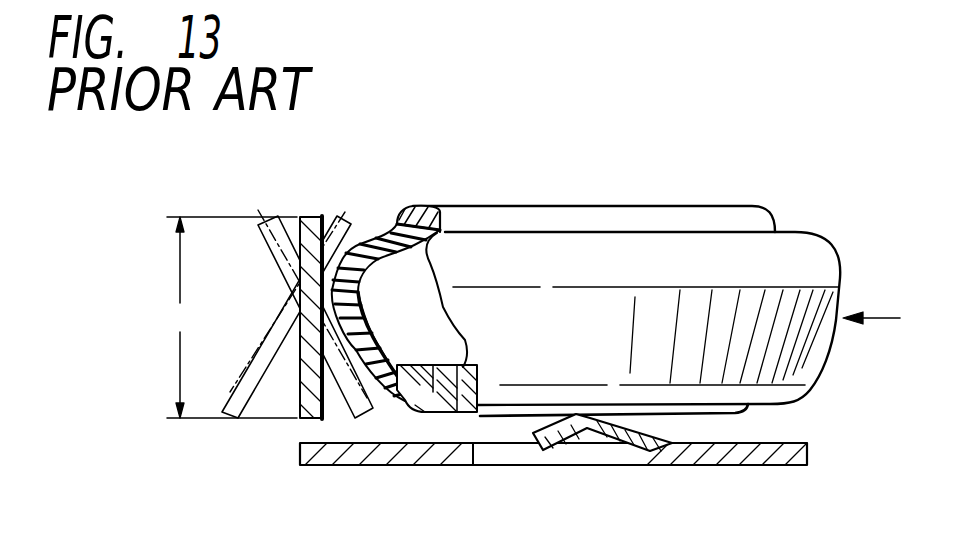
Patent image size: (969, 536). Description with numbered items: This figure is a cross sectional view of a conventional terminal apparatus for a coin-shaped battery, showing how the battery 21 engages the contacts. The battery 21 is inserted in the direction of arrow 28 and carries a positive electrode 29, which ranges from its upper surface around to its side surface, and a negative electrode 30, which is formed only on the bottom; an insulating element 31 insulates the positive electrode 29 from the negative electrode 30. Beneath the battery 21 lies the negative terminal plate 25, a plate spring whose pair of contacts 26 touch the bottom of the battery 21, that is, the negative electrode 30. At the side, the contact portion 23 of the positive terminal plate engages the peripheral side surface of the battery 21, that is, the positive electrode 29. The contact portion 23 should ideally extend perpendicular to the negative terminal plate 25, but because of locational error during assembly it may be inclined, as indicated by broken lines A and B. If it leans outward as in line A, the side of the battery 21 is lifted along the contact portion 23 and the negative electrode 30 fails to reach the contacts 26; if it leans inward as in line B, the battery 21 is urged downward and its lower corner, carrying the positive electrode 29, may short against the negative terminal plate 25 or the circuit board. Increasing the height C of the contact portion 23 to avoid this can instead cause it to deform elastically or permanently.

The coin-shaped battery 21 is at (780, 248).
The contact portion 23 is at (306, 215).
The negative terminal plate 25 is at (355, 466).
The contacts 26 is at (578, 430).
The arrow 28 is at (883, 318).
The positive electrode 29 is at (413, 205).
The negative electrode 30 is at (464, 368).
The insulating element 31 is at (376, 314).
The broken line A is at (258, 210).
The broken line B is at (346, 212).
The height of the contact portion C is at (232, 317).